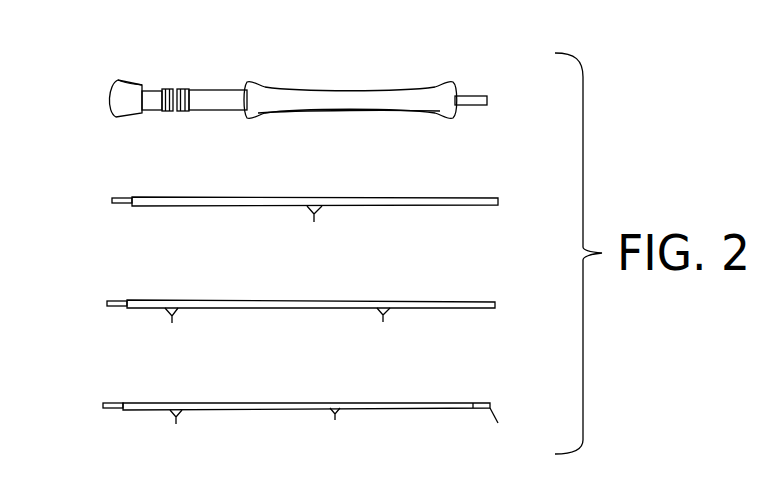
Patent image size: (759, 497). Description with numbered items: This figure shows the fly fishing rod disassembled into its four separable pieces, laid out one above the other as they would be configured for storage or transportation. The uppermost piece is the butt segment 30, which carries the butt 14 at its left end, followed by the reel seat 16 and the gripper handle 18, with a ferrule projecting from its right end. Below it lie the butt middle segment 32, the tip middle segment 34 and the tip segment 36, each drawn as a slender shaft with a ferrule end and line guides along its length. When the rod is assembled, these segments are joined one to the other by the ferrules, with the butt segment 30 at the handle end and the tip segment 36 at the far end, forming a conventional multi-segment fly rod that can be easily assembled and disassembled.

The butt 14 is at (128, 85).
The reel seat 16 is at (217, 95).
The gripper handle 18 is at (371, 97).
The butt segment 30 is at (467, 95).
The butt middle segment 32 is at (455, 201).
The tip middle segment 34 is at (455, 302).
The tip segment 36 is at (456, 405).